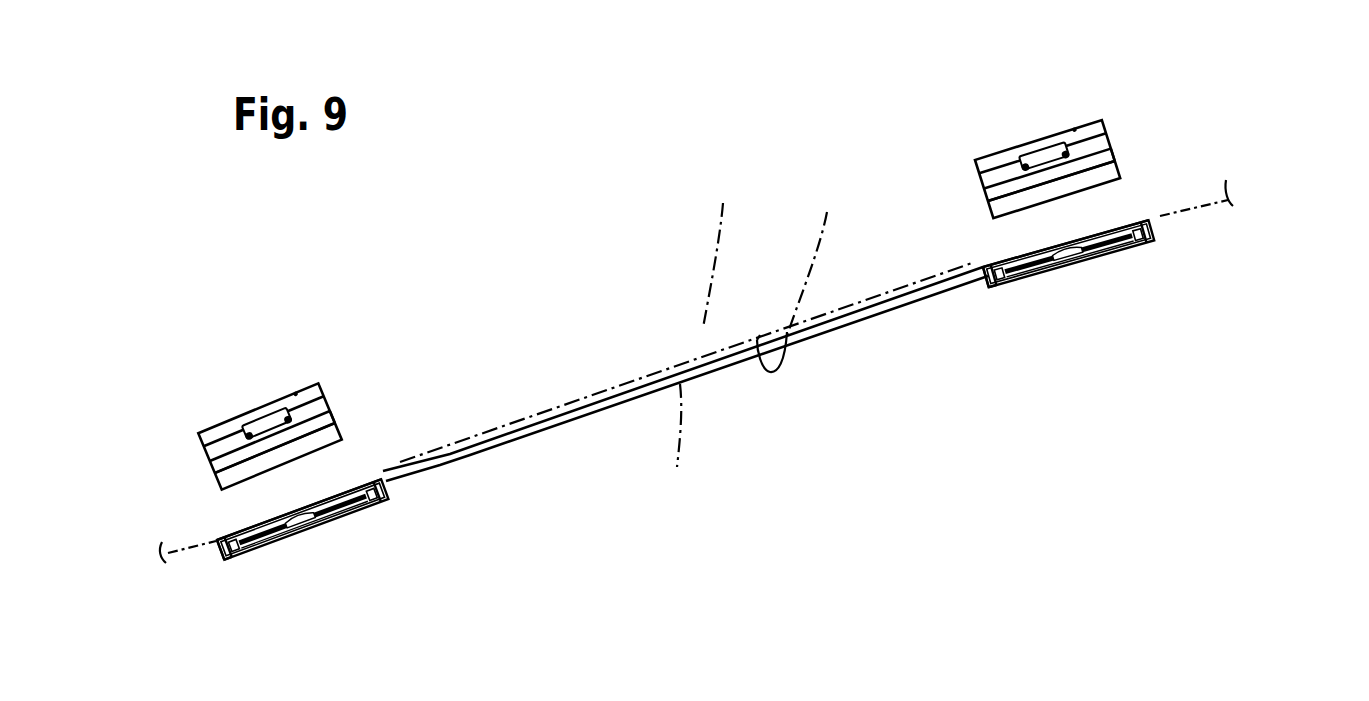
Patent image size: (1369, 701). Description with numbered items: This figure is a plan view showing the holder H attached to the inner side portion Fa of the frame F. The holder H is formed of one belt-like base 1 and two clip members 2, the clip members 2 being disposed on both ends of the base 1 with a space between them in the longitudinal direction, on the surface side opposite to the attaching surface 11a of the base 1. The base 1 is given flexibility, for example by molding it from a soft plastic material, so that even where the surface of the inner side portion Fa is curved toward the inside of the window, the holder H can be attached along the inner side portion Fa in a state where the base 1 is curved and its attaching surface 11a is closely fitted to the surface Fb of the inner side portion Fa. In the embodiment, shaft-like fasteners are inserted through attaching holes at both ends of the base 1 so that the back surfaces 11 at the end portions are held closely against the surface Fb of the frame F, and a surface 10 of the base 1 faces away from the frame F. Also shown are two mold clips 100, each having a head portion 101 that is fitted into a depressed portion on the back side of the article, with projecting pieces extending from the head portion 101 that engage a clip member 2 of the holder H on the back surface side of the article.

The base 1 is at (640, 383).
The surface of the base 10 is at (560, 408).
The clip member 2 is at (252, 557).
The back surface of the base 11 is at (238, 528).
The attaching surface 11a is at (721, 335).
The mold clip 100 is at (298, 395).
The head portion 101 is at (312, 425).
The frame F is at (719, 250).
The inner side portion of the frame Fa is at (792, 275).
The surface of the inner side portion Fb is at (810, 259).
The holder H is at (664, 455).